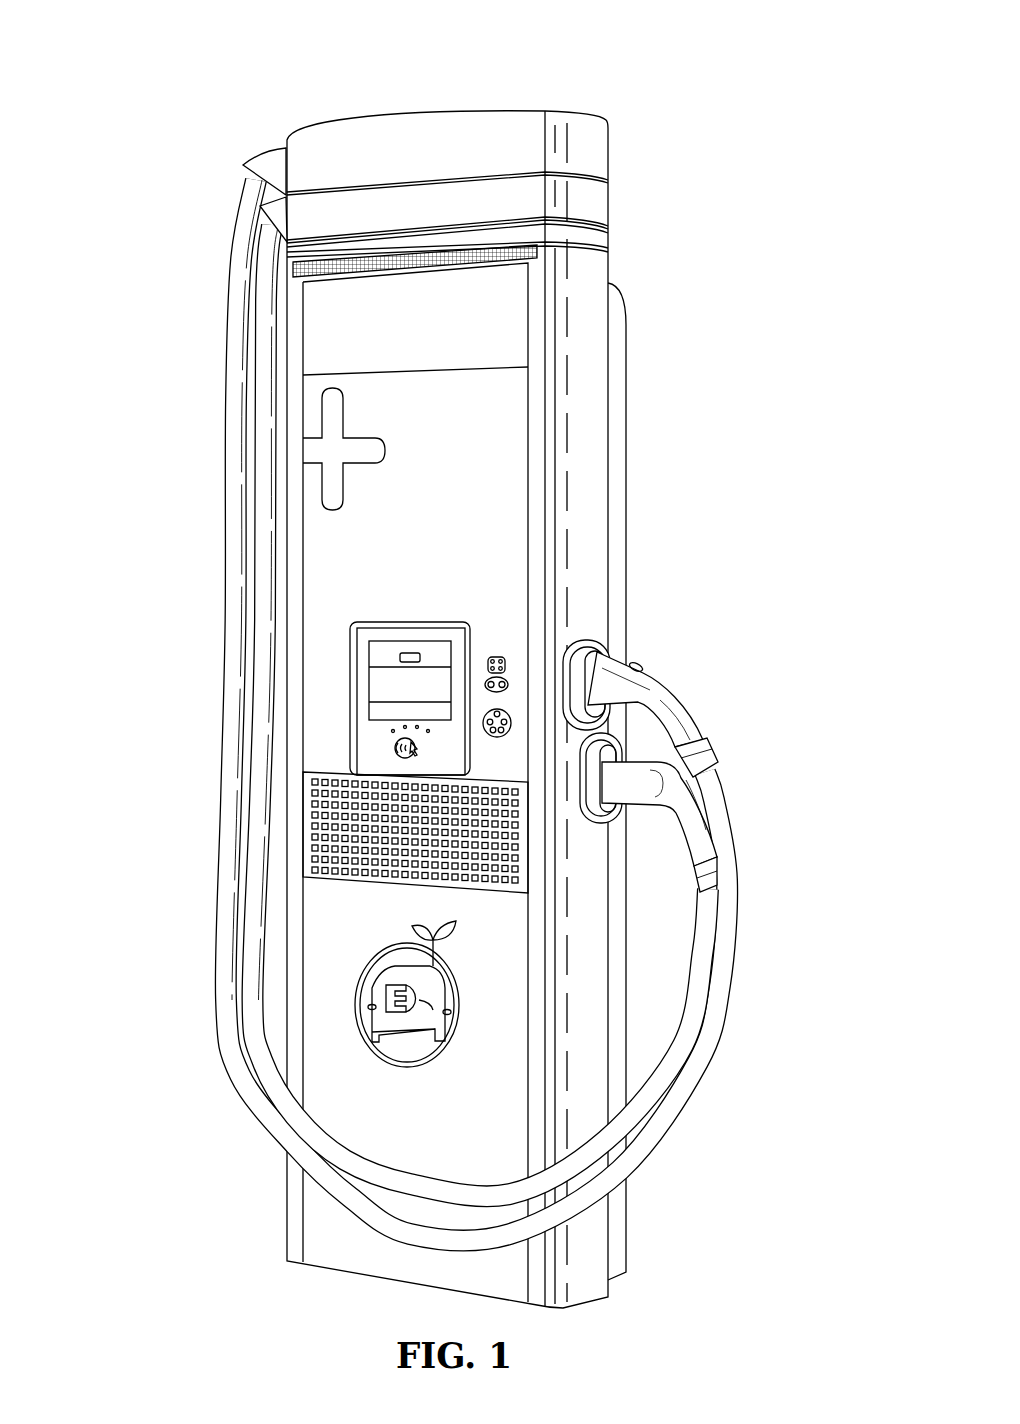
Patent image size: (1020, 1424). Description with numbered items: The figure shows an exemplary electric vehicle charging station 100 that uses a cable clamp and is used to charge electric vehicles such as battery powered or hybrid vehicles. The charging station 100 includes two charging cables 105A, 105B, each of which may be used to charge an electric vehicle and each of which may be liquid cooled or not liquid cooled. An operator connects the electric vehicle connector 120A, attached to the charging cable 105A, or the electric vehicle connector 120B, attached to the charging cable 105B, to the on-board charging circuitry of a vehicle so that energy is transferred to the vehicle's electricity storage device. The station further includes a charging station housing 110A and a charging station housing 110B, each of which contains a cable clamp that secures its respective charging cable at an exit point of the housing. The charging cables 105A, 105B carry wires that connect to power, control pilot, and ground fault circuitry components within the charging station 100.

The charging station 100 is at (619, 58).
The charging cable 105A is at (232, 378).
The charging cable 105B is at (260, 502).
The charging station housing 110A is at (598, 147).
The charging station housing 110B is at (598, 200).
The electric vehicle connector 120A is at (685, 663).
The electric vehicle connector 120B is at (675, 833).